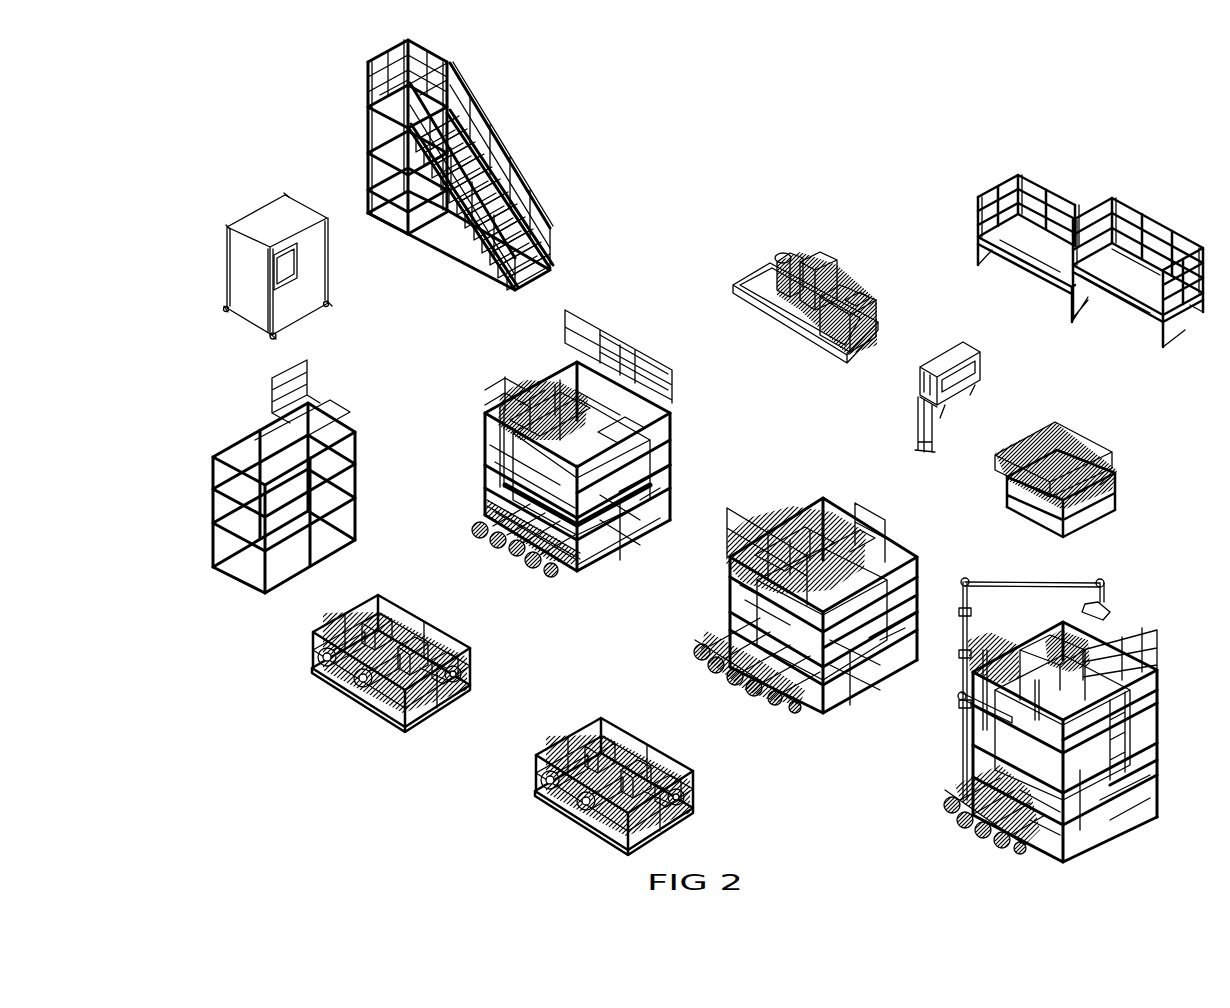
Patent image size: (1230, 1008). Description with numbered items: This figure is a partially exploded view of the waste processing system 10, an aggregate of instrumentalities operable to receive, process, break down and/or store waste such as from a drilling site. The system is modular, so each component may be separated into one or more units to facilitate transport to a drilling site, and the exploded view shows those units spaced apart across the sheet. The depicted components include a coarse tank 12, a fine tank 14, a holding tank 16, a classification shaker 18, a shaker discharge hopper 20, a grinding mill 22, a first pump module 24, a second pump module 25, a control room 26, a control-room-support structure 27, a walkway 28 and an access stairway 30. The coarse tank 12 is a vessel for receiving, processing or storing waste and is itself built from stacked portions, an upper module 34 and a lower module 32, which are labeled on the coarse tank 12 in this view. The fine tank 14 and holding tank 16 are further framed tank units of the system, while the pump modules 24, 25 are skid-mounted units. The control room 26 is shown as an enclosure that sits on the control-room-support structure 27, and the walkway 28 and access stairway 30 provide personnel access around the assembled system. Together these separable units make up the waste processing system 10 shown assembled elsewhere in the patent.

The waste processing system 10 is at (840, 118).
The coarse tank 12 is at (553, 373).
The fine tank 14 is at (884, 530).
The holding tank 16 is at (1110, 640).
The classification shaker 18 is at (1077, 443).
The shaker discharge hopper 20 is at (965, 351).
The grinding mill 22 is at (827, 263).
The first pump module 24 is at (354, 691).
The second pump module 25 is at (566, 824).
The control room 26 is at (230, 264).
The control-room-support structure 27 is at (215, 499).
The walkway 28 is at (1117, 273).
The access stairway 30 is at (380, 103).
The lower module 32 is at (625, 545).
The upper module 34 is at (674, 436).